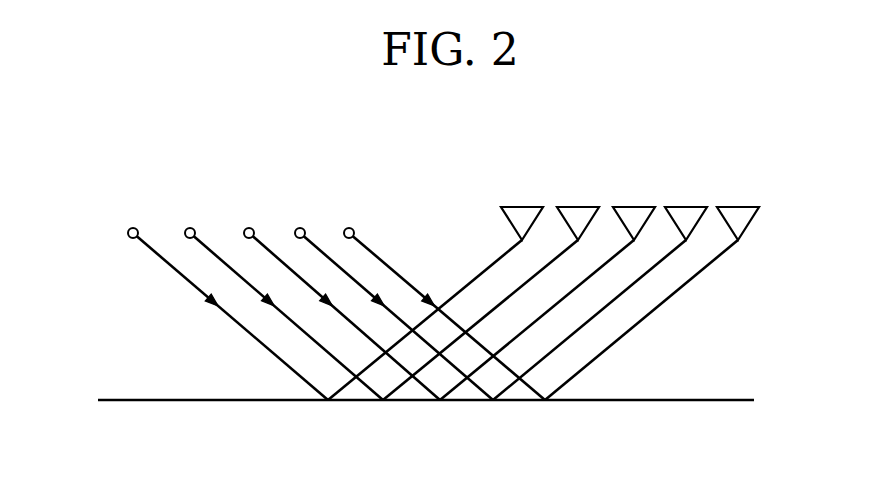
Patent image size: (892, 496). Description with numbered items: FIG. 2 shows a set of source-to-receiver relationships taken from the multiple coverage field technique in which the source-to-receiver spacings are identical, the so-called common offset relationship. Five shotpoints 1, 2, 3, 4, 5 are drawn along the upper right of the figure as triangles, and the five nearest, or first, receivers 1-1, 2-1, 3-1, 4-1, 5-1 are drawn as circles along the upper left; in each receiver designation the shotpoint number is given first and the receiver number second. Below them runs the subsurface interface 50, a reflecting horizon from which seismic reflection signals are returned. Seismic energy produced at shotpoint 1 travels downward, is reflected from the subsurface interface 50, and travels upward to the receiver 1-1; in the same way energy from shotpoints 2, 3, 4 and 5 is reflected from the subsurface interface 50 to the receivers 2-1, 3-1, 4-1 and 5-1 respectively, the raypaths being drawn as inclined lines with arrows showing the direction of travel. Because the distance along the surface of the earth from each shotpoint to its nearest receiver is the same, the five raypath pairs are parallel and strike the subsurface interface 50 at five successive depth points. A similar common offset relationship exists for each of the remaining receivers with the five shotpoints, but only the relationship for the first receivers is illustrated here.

The receiver 1-1 is at (218, 300).
The receiver 2-1 is at (274, 300).
The receiver 3-1 is at (332, 300).
The receiver 4-1 is at (384, 300).
The receiver 5-1 is at (434, 300).
The shotpoint 1 is at (435, 303).
The shotpoint 2 is at (491, 303).
The shotpoint 3 is at (547, 303).
The shotpoint 4 is at (600, 303).
The shotpoint 5 is at (652, 303).
The subsurface interface 50 is at (135, 380).